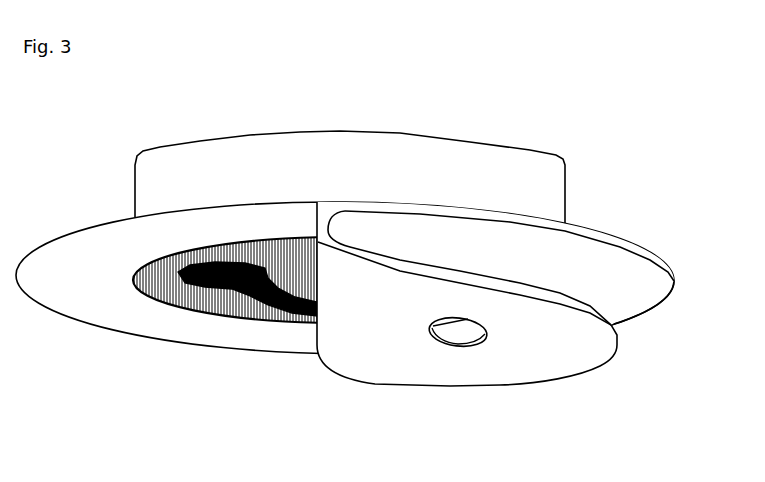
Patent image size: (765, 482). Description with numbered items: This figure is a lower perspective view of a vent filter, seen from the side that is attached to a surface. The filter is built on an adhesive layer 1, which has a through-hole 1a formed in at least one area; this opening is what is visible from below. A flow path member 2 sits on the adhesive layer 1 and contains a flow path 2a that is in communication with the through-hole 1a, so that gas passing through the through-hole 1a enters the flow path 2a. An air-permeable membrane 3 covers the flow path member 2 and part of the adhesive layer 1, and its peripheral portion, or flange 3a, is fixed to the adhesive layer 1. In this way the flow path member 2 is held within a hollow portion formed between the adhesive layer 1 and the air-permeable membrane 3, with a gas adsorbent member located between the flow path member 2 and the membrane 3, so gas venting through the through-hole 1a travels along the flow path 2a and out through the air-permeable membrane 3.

The adhesive layer 1 is at (580, 345).
The through-hole 1a is at (440, 340).
The flow path member 2 is at (182, 313).
The flow path 2a is at (262, 323).
The air-permeable membrane 3 is at (485, 156).
The peripheral portion (flange) 3a is at (632, 241).